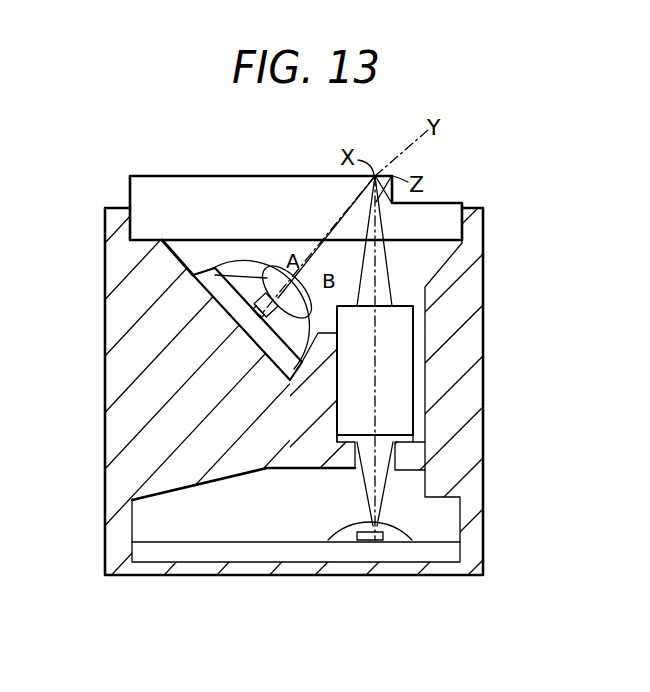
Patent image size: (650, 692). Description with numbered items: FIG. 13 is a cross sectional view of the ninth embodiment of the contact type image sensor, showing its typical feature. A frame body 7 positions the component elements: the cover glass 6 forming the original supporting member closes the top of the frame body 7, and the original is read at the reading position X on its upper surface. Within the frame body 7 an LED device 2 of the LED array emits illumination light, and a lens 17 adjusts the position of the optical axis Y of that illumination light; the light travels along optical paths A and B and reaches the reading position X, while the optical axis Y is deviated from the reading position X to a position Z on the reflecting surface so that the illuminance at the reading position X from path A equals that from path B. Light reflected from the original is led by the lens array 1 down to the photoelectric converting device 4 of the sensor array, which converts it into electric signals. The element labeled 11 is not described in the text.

The lens array 1 is at (402, 381).
The LED device 2 is at (232, 317).
The photoelectric converting device 4 is at (353, 537).
The cover glass 6 is at (196, 192).
The frame body 7 is at (118, 383).
The step portion 11 is at (394, 192).
The lens 17 is at (200, 272).